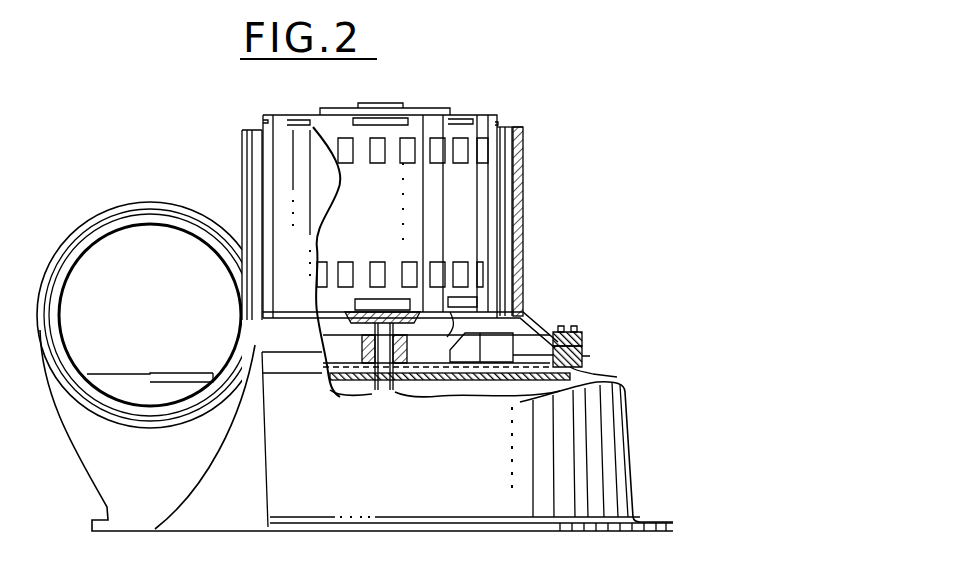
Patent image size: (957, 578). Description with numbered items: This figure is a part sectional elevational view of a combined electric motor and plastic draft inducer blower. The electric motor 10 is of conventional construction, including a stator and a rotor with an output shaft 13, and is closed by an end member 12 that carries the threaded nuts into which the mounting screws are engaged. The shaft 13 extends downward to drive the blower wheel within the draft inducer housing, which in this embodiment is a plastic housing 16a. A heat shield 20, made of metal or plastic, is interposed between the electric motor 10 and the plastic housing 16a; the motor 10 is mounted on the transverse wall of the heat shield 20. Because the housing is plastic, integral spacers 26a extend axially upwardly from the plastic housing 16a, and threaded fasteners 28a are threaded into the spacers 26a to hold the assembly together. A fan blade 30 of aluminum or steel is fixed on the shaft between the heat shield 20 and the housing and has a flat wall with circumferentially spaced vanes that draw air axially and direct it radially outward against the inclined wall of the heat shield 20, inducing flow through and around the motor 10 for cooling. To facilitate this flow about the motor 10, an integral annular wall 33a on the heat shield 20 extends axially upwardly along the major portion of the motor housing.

The electric motor 10 is at (493, 107).
The end member 12 is at (417, 108).
The output shaft 13 is at (383, 388).
The plastic housing 16a is at (102, 227).
The heat shield 20 is at (530, 292).
The integral spacers 26a is at (583, 360).
The threaded fasteners 28a is at (570, 332).
The fan blade 30 is at (430, 381).
The annular wall 33a is at (523, 215).